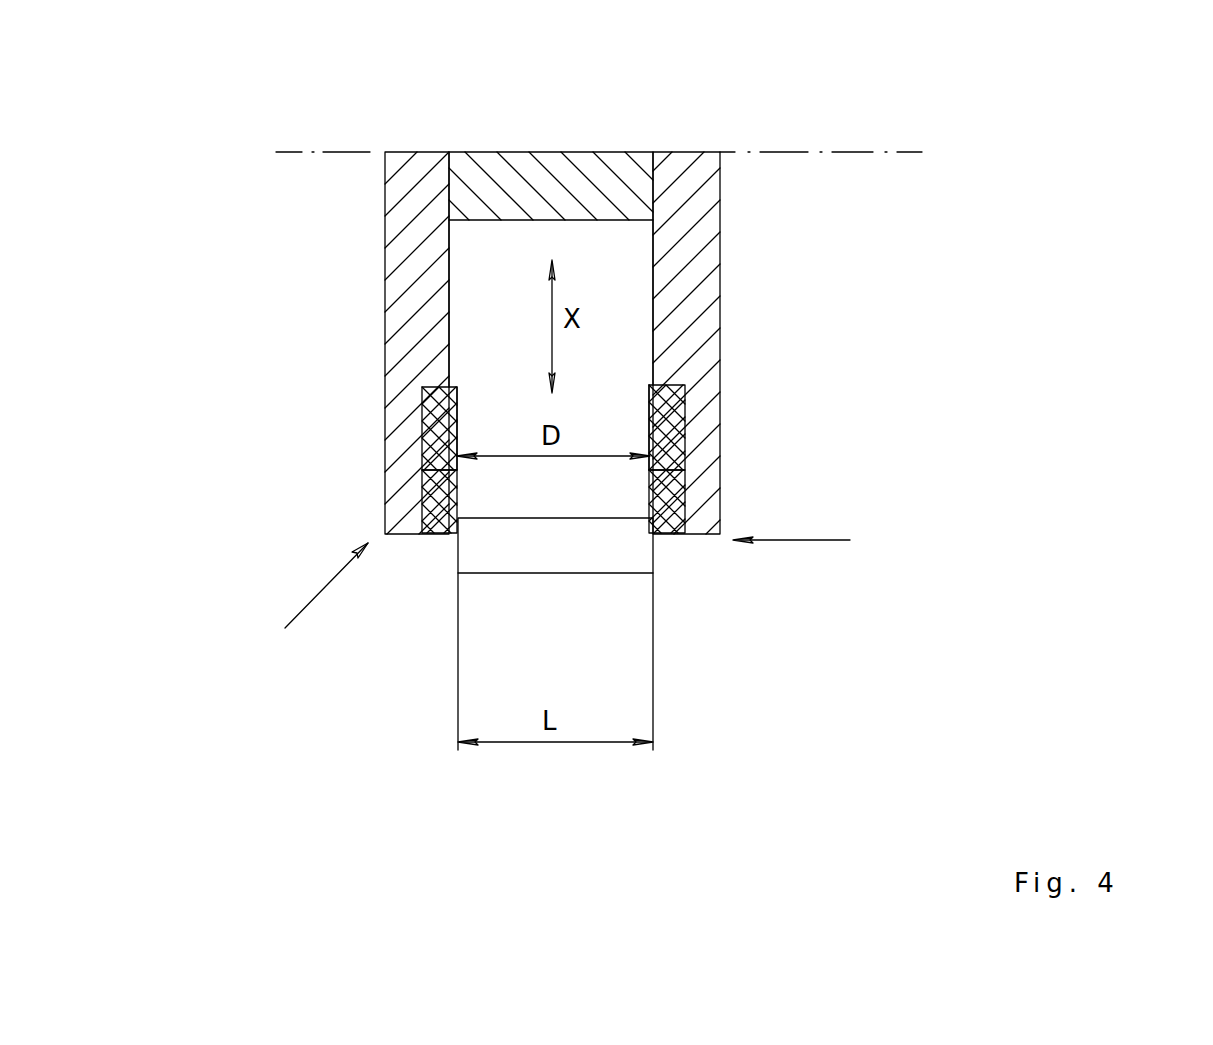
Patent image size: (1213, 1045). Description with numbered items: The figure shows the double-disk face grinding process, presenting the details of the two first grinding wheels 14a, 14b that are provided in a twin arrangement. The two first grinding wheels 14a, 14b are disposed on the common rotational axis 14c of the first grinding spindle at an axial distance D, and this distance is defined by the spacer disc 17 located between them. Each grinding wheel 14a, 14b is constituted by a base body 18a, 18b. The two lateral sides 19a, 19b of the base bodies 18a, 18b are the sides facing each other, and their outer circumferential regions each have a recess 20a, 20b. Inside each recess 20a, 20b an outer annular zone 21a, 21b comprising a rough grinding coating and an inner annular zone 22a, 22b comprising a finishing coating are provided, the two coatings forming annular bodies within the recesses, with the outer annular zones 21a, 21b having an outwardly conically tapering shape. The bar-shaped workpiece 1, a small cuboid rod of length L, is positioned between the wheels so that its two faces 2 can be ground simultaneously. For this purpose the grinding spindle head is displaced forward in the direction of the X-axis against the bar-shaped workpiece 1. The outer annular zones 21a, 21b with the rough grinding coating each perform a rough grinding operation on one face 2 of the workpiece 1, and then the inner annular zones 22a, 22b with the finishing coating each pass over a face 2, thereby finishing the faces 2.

The bar-shaped workpiece 1 is at (560, 545).
The face 2 is at (457, 550).
The first grinding wheel 14a is at (304, 603).
The first grinding wheel 14b is at (824, 543).
The common rotational axis 14c is at (873, 152).
The spacer disc 17 is at (585, 187).
The base body 18a is at (397, 278).
The base body 18b is at (683, 282).
The lateral side 19a is at (450, 273).
The lateral side 19b is at (653, 275).
The recess 20a is at (447, 415).
The recess 20b is at (690, 422).
The outer annular zone 21a is at (443, 507).
The outer annular zone 21b is at (657, 497).
The inner annular zone 22a is at (438, 420).
The inner annular zone 22b is at (660, 412).